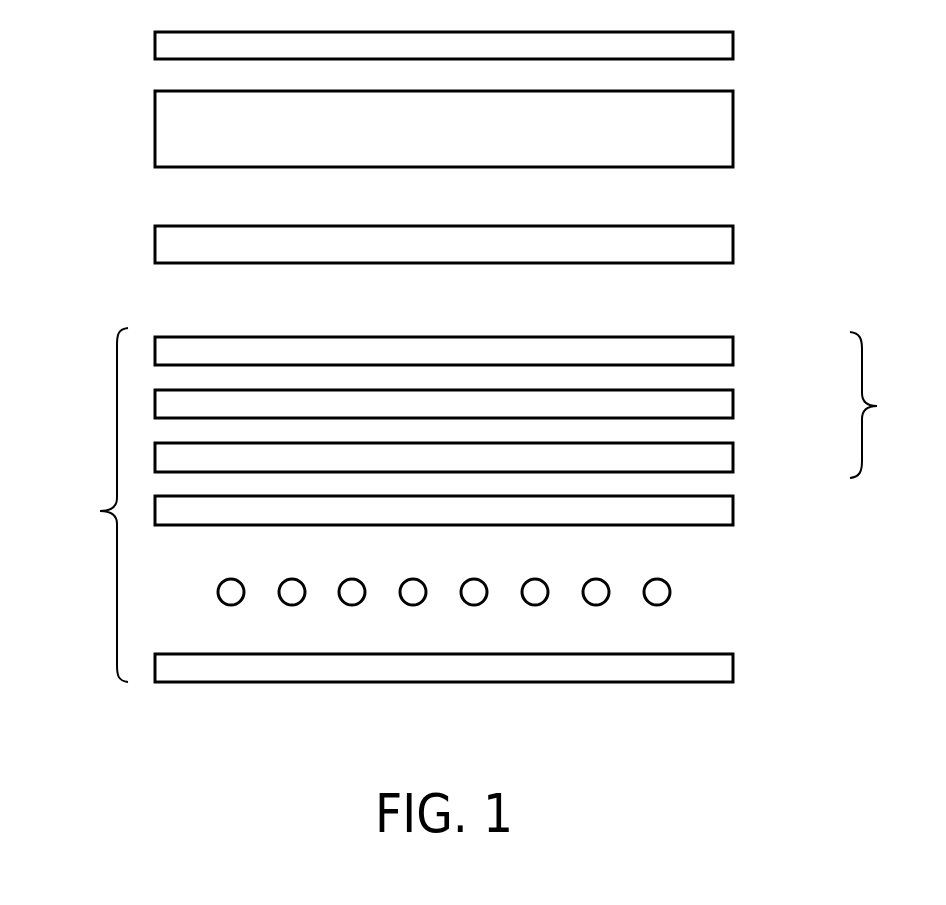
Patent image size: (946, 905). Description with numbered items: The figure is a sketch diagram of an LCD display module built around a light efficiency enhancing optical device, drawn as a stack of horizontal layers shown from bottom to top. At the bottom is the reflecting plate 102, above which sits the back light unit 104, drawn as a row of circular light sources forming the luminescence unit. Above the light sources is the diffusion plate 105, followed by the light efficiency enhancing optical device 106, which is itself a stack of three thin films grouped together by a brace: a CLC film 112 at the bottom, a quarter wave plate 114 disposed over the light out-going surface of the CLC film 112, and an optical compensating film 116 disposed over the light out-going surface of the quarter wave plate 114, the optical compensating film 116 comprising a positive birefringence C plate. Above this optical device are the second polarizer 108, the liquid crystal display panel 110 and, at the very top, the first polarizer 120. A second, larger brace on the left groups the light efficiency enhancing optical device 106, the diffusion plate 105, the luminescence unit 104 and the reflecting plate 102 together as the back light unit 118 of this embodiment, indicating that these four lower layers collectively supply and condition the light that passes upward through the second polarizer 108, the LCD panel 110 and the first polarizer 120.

The first polarizer 120 is at (733, 42).
The liquid crystal display panel 110 is at (733, 126).
The second polarizer 108 is at (733, 241).
The optical compensating film 116 is at (733, 348).
The quarter wave plate 114 is at (733, 401).
The CLC film 112 is at (733, 454).
The light efficiency enhancing optical device 106 is at (893, 405).
The diffusion plate 105 is at (733, 507).
The back light unit 104 is at (670, 590).
The reflecting plate 102 is at (733, 665).
The back light unit 118 is at (85, 505).